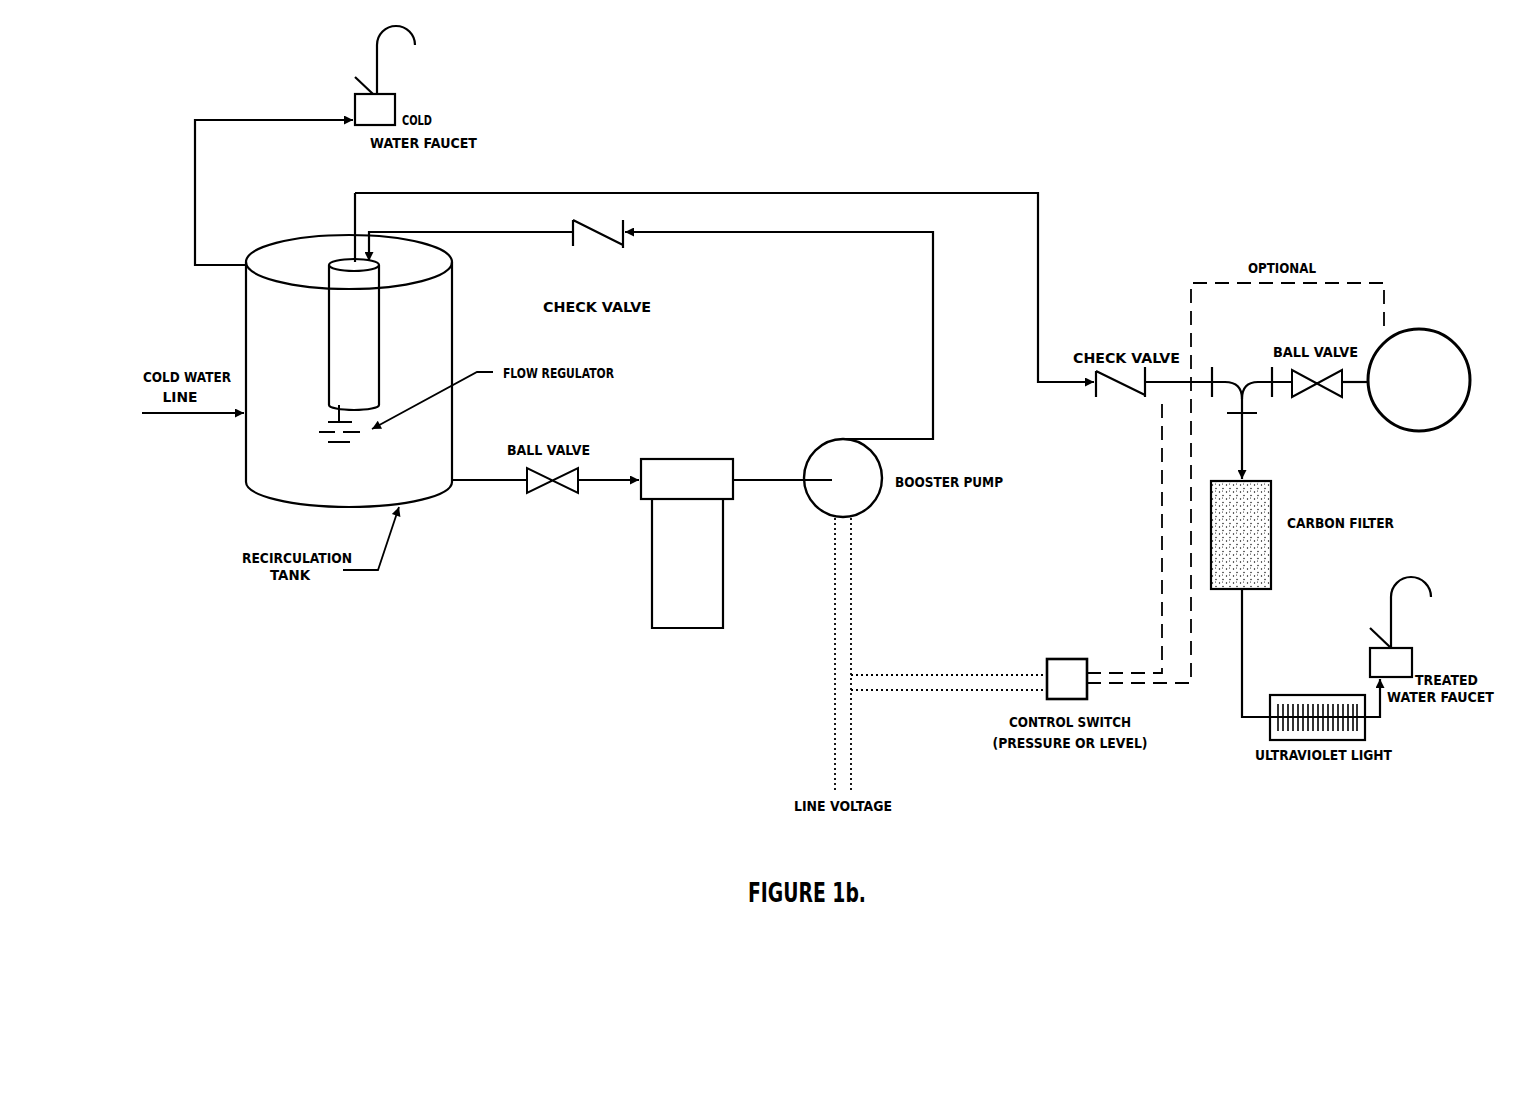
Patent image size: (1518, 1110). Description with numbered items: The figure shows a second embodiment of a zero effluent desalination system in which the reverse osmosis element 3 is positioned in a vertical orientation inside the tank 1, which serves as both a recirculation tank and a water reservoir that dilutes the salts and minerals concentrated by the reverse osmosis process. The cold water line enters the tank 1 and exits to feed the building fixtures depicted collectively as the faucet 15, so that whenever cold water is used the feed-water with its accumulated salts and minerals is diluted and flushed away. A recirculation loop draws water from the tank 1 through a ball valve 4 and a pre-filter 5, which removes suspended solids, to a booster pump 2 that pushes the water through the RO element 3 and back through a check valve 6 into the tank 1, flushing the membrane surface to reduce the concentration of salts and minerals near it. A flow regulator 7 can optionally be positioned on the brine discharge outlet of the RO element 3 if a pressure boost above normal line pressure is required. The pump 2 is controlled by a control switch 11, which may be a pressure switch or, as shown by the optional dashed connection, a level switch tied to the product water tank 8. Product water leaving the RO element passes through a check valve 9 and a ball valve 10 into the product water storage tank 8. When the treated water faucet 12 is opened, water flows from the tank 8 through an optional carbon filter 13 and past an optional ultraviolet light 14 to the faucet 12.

The tank 1 is at (284, 498).
The booster pump 2 is at (877, 502).
The reverse osmosis element 3 is at (329, 351).
The ball valve 4 is at (575, 492).
The cartridge pre-filter 5 is at (723, 579).
The check valve 6 is at (620, 248).
The flow regulator 7 is at (350, 442).
The product water storage tank 8 is at (1422, 329).
The check valve 9 is at (1143, 397).
The ball valve 10 is at (1342, 392).
The control switch 11 is at (1067, 659).
The treated water faucet 12 is at (1412, 648).
The carbon filter 13 is at (1271, 573).
The ultraviolet light 14 is at (1310, 695).
The faucet 15 is at (395, 93).